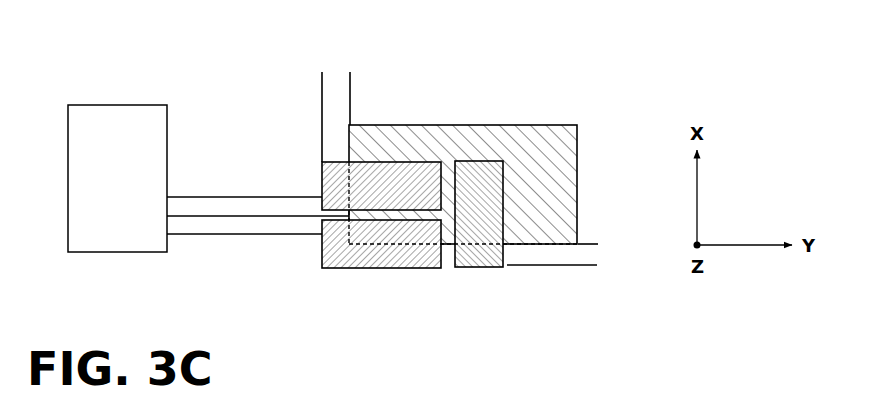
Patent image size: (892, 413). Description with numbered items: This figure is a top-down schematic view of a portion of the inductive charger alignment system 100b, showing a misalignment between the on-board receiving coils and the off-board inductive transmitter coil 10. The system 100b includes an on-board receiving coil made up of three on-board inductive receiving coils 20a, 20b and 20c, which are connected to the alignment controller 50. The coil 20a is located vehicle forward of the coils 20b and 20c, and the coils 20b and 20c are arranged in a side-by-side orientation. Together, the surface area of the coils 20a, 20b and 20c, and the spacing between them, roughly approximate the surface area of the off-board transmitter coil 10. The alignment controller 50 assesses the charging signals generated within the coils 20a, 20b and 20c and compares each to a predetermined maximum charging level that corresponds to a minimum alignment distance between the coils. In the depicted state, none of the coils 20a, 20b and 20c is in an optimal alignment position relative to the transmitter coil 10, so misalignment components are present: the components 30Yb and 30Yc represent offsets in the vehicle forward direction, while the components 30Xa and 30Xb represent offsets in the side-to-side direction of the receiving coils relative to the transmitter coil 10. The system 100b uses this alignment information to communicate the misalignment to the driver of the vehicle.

The alignment controller 50 is at (125, 186).
The inductive charger alignment system 100b is at (562, 101).
The off-board inductive transmitter coil 10 is at (561, 166).
The on-board inductive receiving coil 20a is at (484, 159).
The on-board inductive receiving coil 20b is at (366, 271).
The on-board inductive receiving coil 20c is at (388, 159).
The misalignment component 30Yb is at (333, 76).
The misalignment component 30Yc is at (373, 67).
The misalignment component 30Xa is at (588, 246).
The misalignment component 30Xb is at (594, 299).